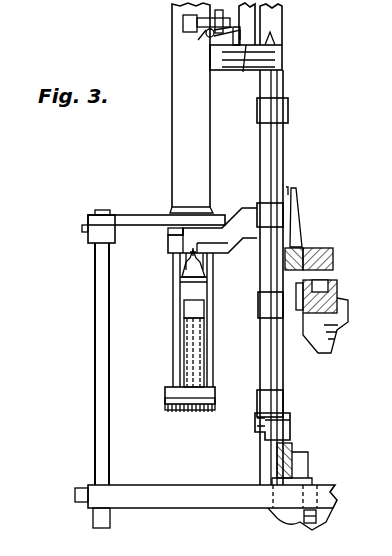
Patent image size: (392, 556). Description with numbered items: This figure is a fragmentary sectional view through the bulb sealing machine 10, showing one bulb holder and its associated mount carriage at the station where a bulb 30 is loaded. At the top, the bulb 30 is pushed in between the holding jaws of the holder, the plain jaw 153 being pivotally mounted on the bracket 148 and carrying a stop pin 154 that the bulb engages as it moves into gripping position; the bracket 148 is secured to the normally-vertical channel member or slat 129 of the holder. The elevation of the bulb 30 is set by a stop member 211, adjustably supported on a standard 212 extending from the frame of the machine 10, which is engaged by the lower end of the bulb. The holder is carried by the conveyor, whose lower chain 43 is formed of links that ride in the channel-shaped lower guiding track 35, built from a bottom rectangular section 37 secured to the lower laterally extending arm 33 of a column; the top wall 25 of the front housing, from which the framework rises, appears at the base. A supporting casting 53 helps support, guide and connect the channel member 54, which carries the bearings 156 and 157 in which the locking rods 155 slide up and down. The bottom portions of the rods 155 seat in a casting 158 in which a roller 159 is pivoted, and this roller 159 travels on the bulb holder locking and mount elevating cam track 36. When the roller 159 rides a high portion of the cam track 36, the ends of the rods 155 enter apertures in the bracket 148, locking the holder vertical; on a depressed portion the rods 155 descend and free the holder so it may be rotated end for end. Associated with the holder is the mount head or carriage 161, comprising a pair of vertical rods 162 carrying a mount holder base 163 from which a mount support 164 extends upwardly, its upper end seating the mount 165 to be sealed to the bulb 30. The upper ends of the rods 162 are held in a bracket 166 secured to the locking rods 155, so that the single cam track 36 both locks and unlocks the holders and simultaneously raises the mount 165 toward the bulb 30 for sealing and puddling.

The plain jaw 153 is at (183, 22).
The stop pin 154 is at (204, 37).
The channel member 54 is at (280, 20).
The bracket 148 is at (283, 57).
The channel member or slat 129 is at (243, 74).
The bearing 156 is at (289, 109).
The locking rods 155 is at (286, 142).
The bulb 30 is at (173, 122).
The mount head or carriage 161 is at (245, 205).
The stop member 211 is at (143, 213).
The supporting casting 53 is at (291, 183).
The lower chain 43 is at (326, 250).
The mount 165 is at (173, 277).
The bracket 166 is at (245, 250).
The bearing 157 is at (258, 305).
The lower guiding track 35 is at (298, 303).
The bottom rectangular section 37 is at (298, 322).
The lower laterally extending arm 33 is at (322, 353).
The mount support 164 is at (190, 300).
The rods 162 is at (180, 340).
The standard 212 is at (98, 338).
The mount holder base 163 is at (188, 418).
The casting 158 is at (266, 405).
The roller 159 is at (292, 434).
The bulb holder locking and mount elevating cam track 36 is at (278, 451).
The top wall 25 is at (206, 520).
The frame 10 is at (24, 550).